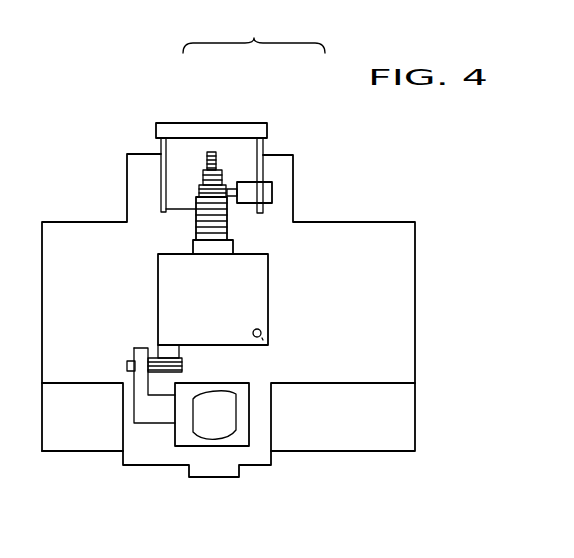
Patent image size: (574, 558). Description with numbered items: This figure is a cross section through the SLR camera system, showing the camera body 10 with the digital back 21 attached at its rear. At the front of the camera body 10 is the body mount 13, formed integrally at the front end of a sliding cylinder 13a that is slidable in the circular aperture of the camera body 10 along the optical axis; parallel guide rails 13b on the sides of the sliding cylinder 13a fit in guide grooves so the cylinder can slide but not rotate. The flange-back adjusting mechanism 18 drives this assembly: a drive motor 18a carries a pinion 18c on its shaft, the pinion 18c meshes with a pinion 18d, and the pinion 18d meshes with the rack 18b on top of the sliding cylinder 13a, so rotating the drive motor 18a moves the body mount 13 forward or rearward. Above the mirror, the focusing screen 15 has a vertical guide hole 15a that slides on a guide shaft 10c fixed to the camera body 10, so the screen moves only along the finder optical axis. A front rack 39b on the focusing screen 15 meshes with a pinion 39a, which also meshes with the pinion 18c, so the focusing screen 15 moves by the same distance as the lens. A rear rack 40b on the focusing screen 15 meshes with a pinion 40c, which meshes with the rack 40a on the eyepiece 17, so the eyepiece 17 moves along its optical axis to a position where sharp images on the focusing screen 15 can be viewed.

The camera body 10 is at (415, 264).
The guide shaft 10c is at (262, 338).
The body mount 13 is at (170, 128).
The sliding cylinder 13a is at (177, 152).
The guide rails 13b is at (163, 181).
The focusing screen 15 is at (268, 285).
The guide hole 15a is at (261, 334).
The eyepiece 17 is at (228, 425).
The flange-back adjusting mechanism 18 is at (254, 40).
The drive motor 18a is at (248, 182).
The rack 18b is at (229, 187).
The pinion 18c is at (218, 157).
The pinion 18d is at (203, 174).
The digital back 21 is at (415, 414).
The pinion 39a is at (197, 226).
The front rack 39b is at (233, 246).
The rack 40a is at (140, 378).
The rear rack 40b is at (178, 350).
The pinion 40c is at (128, 363).